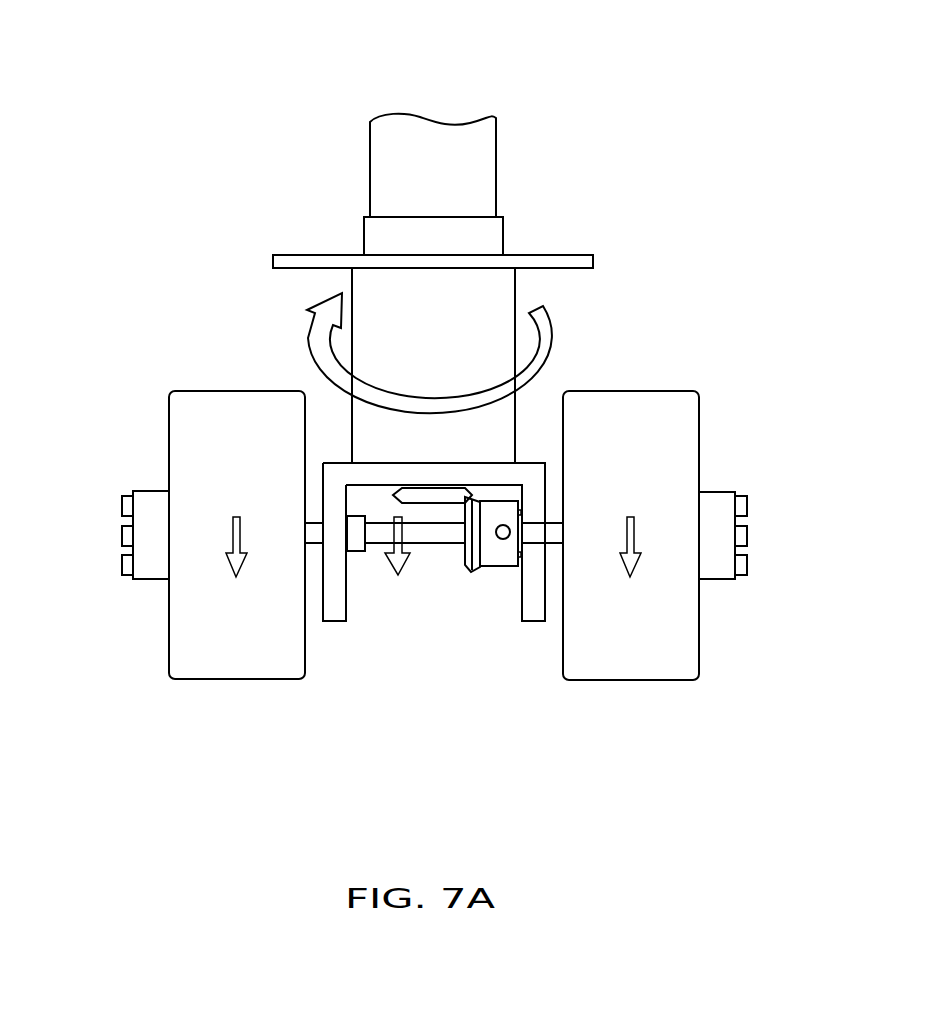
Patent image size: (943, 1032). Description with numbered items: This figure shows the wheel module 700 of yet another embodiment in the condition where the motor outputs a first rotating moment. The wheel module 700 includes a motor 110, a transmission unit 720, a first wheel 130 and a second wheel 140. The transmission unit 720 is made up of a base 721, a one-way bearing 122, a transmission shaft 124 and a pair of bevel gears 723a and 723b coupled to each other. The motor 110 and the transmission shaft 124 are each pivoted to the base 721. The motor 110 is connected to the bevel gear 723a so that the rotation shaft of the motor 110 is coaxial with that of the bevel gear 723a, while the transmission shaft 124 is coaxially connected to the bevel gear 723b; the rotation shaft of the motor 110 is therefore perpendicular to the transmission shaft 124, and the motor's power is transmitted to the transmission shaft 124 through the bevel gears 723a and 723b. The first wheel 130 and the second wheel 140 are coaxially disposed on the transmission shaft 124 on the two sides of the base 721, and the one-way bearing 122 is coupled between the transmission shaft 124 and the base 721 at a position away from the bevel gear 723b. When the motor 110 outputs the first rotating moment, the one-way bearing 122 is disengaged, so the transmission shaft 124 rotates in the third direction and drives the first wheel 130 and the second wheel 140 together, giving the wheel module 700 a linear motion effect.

The wheel module 700 is at (520, 82).
The motor 110 is at (488, 152).
The first wheel 130 is at (233, 675).
The second wheel 140 is at (628, 675).
The transmission unit 720 is at (470, 720).
The base 721 is at (333, 614).
The transmission shaft 124 is at (430, 537).
The one-way bearing 122 is at (357, 551).
The bevel gear 723a is at (447, 494).
The bevel gear 723b is at (477, 568).